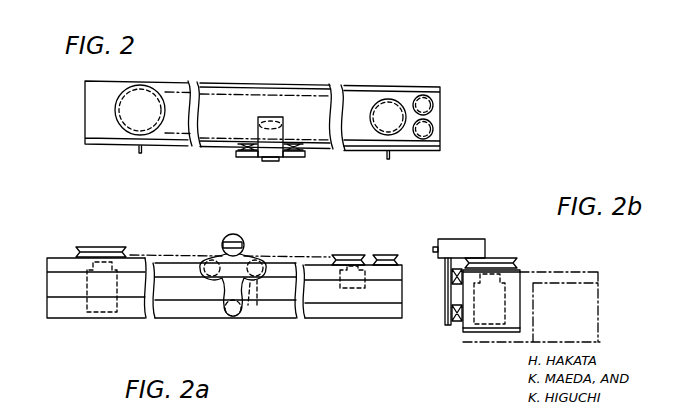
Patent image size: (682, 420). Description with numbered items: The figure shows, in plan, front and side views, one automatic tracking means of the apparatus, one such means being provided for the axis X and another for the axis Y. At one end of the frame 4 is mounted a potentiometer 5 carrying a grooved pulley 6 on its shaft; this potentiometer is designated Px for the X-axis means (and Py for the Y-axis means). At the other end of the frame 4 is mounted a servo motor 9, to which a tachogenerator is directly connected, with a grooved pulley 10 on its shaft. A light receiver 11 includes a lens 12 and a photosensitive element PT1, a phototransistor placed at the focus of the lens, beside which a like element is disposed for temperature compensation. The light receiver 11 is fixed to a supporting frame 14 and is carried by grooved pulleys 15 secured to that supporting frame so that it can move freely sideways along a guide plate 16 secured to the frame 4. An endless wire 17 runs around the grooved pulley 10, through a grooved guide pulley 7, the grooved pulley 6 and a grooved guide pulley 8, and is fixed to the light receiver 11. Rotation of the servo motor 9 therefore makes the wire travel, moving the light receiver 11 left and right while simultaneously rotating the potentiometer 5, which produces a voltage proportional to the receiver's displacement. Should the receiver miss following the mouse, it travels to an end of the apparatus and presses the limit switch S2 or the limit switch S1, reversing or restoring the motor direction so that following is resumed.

In FIG. 2, the frame 4 is at (88, 92).
In FIG. 2A, the frame 4 is at (57, 262).
In FIG. 2B, the frame 4 is at (515, 300).
In FIG. 2A, the potentiometer 5 is at (343, 290).
In FIG. 2, the grooved pulley 6 is at (382, 106).
In FIG. 2A, the grooved pulley 6 is at (352, 256).
In FIG. 2, the grooved guide pulley 7 is at (433, 128).
In FIG. 2A, the grooved guide pulley 7 is at (384, 255).
In FIG. 2, the grooved guide pulley 8 is at (420, 95).
In FIG. 2A, the servo motor 9 is at (92, 313).
In FIG. 2B, the servo motor 9 is at (490, 324).
In FIG. 2, the grooved pulley 10 is at (132, 125).
In FIG. 2A, the grooved pulley 10 is at (96, 249).
In FIG. 2, the light receiver 11 is at (262, 158).
In FIG. 2B, the light receiver 11 is at (440, 256).
In FIG. 2, the lens 12 is at (273, 117).
In FIG. 2A, the lens 12 is at (233, 275).
In FIG. 2B, the lens 12 is at (481, 256).
In FIG. 2, the supporting frame 14 is at (238, 156).
In FIG. 2A, the supporting frame 14 is at (225, 290).
In FIG. 2, the grooved pulleys 15 is at (250, 144).
In FIG. 2A, the grooved pulleys 15 is at (250, 282).
In FIG. 2, the guide plate 16 is at (440, 150).
In FIG. 2A, the guide plate 16 is at (292, 290).
In FIG. 2B, the guide plate 16 is at (460, 298).
In FIG. 2, the endless wire 17 is at (228, 92).
In FIG. 2A, the endless wire 17 is at (178, 255).
In FIG. 2, the limit switch S1 is at (390, 160).
In FIG. 2, the limit switch S2 is at (141, 153).
In FIG. 2, the axis X is at (88, 128).
In FIG. 2A, the axis X is at (357, 320).
In FIG. 2, the photosensitive element PT1 is at (270, 162).
In FIG. 2A, the photosensitive element PT1 is at (238, 243).
In FIG. 2B, the photosensitive element PT1 is at (438, 248).
In FIG. 2B, the potentiometer for the X-axis tracking means Px is at (512, 280).